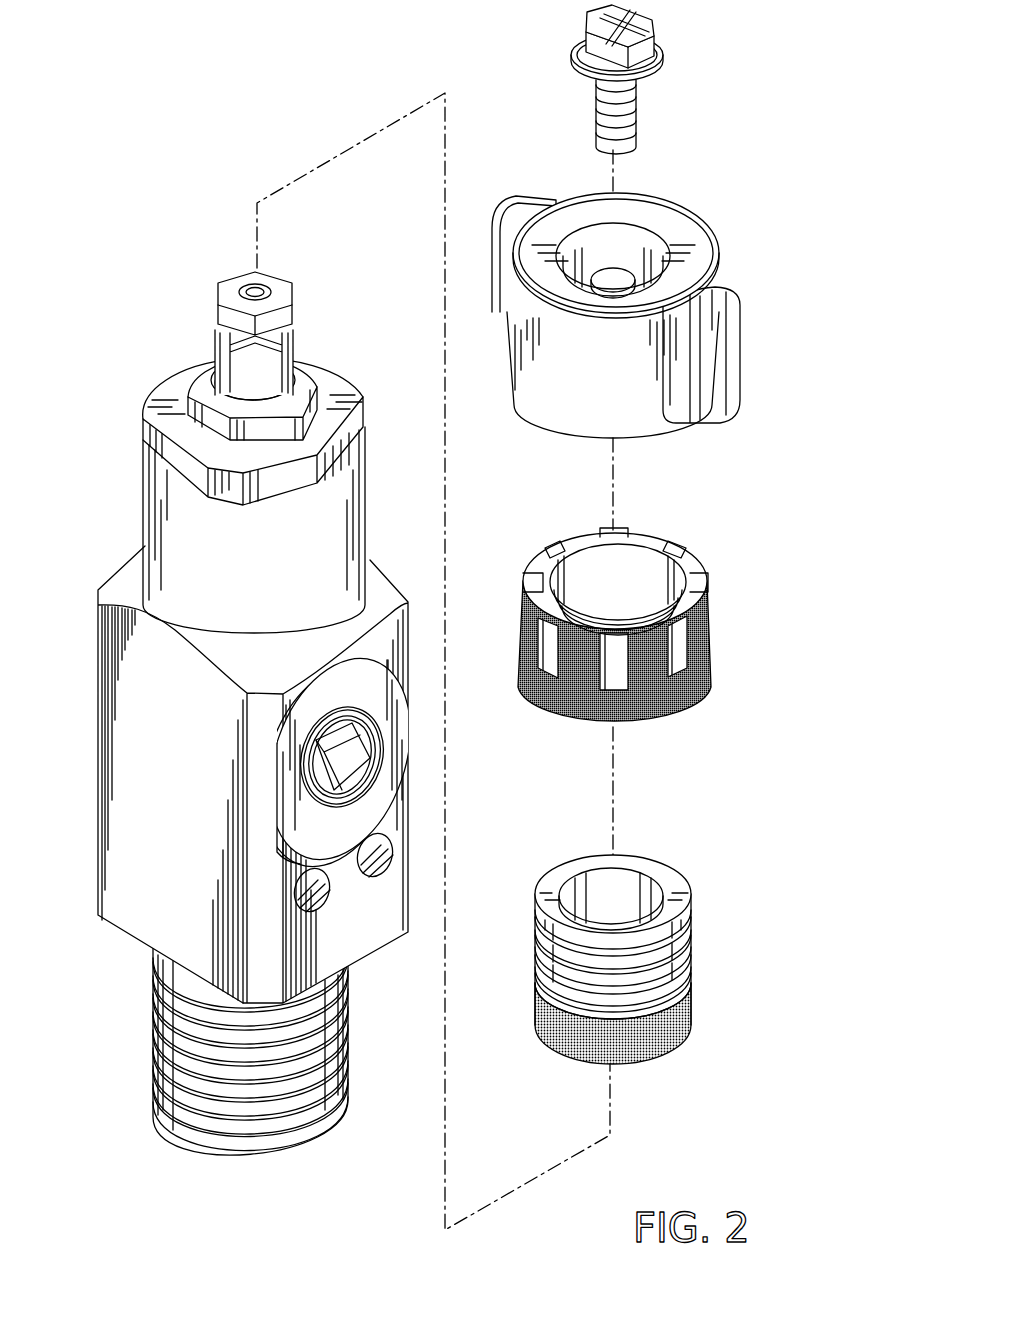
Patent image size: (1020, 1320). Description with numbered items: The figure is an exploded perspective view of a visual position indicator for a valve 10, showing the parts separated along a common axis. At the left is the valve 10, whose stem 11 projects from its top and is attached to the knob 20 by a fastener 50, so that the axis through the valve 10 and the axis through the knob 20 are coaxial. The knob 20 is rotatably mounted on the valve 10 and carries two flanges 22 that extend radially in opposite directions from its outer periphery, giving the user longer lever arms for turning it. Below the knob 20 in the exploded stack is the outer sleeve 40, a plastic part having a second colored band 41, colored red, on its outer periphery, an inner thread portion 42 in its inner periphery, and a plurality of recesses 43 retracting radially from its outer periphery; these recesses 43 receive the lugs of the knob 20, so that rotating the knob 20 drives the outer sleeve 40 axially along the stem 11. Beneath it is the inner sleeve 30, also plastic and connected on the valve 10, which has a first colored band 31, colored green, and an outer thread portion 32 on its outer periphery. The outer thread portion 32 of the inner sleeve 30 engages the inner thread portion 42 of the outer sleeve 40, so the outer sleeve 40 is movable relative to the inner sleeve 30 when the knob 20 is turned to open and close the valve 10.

The valve 10 is at (96, 553).
The stem 11 is at (227, 349).
The knob 20 is at (728, 185).
The flanges 22 is at (536, 205).
The inner sleeve 30 is at (710, 900).
The first colored band 31 is at (673, 1025).
The outer thread portion 32 is at (673, 952).
The outer sleeve 40 is at (735, 590).
The second colored band 41 is at (693, 687).
The inner thread portion 42 is at (663, 557).
The recesses 43 is at (553, 658).
The fastener 50 is at (641, 50).